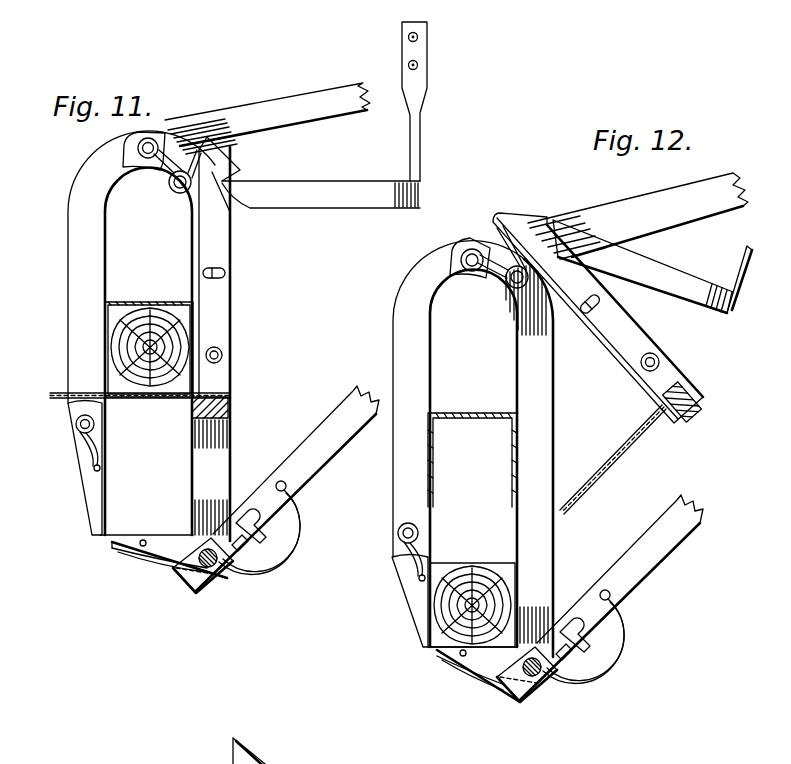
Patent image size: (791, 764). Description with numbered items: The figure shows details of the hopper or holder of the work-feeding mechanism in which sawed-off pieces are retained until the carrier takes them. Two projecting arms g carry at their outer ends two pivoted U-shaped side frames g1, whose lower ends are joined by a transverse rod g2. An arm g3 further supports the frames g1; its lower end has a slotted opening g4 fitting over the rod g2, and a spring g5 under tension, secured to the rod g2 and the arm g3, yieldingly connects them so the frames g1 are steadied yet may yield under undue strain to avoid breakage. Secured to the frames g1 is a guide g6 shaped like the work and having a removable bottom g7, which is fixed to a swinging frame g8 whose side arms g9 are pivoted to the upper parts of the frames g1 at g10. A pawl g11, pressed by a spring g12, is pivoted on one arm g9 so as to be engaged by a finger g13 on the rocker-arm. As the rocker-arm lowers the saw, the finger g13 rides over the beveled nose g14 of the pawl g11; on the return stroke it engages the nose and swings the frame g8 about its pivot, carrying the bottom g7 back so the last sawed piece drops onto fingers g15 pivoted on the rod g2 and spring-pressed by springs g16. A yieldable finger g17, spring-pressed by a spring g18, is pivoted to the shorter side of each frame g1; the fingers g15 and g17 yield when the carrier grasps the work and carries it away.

In FIG. 11, the projecting arms g is at (277, 104).
In FIG. 12, the projecting arms g is at (677, 203).
In FIG. 11, the U-shaped side frames g1 is at (197, 257).
In FIG. 12, the U-shaped side frames g1 is at (527, 357).
In FIG. 11, the transverse rod g2 is at (210, 572).
In FIG. 12, the transverse rod g2 is at (545, 685).
In FIG. 11, the arm g3 is at (307, 448).
In FIG. 12, the arm g3 is at (640, 565).
In FIG. 11, the slotted opening g4 is at (248, 495).
In FIG. 12, the slotted opening g4 is at (563, 625).
In FIG. 11, the spring g5 is at (290, 528).
In FIG. 12, the spring g5 is at (612, 650).
In FIG. 11, the guide g6 is at (167, 290).
In FIG. 12, the guide g6 is at (513, 443).
In FIG. 11, the removable bottom g7 is at (150, 400).
In FIG. 12, the removable bottom g7 is at (603, 475).
In FIG. 11, the swinging frame g8 is at (228, 406).
In FIG. 12, the swinging frame g8 is at (685, 418).
In FIG. 11, the side arms g9 is at (215, 378).
In FIG. 12, the side arms g9 is at (667, 373).
In FIG. 11, the pivot g10 is at (151, 141).
In FIG. 12, the pivot g10 is at (470, 249).
In FIG. 11, the pawl g11 is at (213, 244).
In FIG. 12, the pawl g11 is at (613, 322).
In FIG. 11, the spring g12 is at (187, 140).
In FIG. 12, the spring g12 is at (487, 243).
In FIG. 11, the finger g13 is at (417, 86).
In FIG. 12, the finger g13 is at (683, 283).
In FIG. 11, the beveled nose g14 is at (224, 162).
In FIG. 12, the beveled nose g14 is at (538, 220).
In FIG. 11, the fingers g15 is at (133, 546).
In FIG. 12, the fingers g15 is at (450, 653).
In FIG. 11, the springs g16 is at (165, 548).
In FIG. 12, the springs g16 is at (488, 667).
In FIG. 11, the yieldable finger g17 is at (97, 498).
In FIG. 12, the yieldable finger g17 is at (418, 595).
In FIG. 11, the spring g18 is at (85, 447).
In FIG. 12, the spring g18 is at (405, 562).